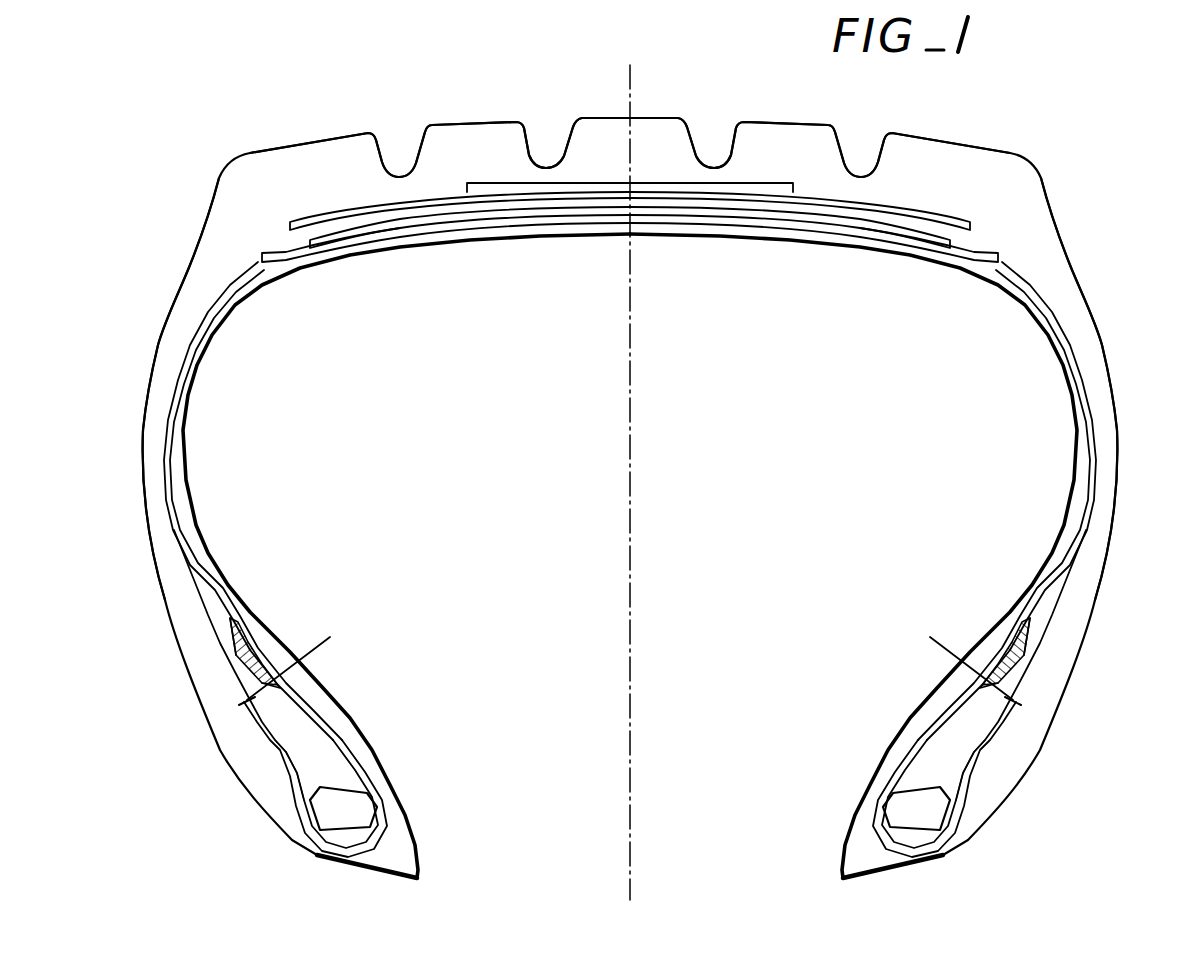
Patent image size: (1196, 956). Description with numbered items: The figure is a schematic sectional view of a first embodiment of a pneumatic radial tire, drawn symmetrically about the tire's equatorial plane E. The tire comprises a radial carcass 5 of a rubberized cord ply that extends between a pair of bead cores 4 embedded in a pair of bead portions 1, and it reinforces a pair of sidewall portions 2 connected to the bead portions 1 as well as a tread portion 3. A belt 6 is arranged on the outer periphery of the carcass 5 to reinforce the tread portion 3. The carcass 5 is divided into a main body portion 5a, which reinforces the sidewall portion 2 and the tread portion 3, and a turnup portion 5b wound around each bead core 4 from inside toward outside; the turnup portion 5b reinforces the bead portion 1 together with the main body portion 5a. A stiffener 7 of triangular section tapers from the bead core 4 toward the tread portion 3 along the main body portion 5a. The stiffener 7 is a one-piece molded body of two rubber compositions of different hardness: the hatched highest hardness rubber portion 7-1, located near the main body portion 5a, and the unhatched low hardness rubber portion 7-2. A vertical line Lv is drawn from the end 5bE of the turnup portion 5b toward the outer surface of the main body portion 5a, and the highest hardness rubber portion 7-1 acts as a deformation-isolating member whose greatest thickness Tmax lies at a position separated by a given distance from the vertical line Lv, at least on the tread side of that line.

The bead portion 1 is at (245, 792).
The sidewall portion 2 is at (146, 529).
The tread portion 3 is at (471, 121).
The bead core 4 is at (338, 817).
The radial carcass 5 is at (205, 546).
The main body portion 5a is at (226, 594).
The turnup portion 5b is at (270, 752).
The end of the turnup portion 5bE is at (247, 702).
The belt 6 is at (590, 184).
The stiffener 7 is at (317, 762).
The highest hardness rubber portion 7-1 is at (240, 628).
The low hardness rubber portion 7-2 is at (293, 730).
The equatorial plane E is at (631, 92).
The vertical line Lv is at (305, 652).
The greatest thickness Tmax is at (230, 640).